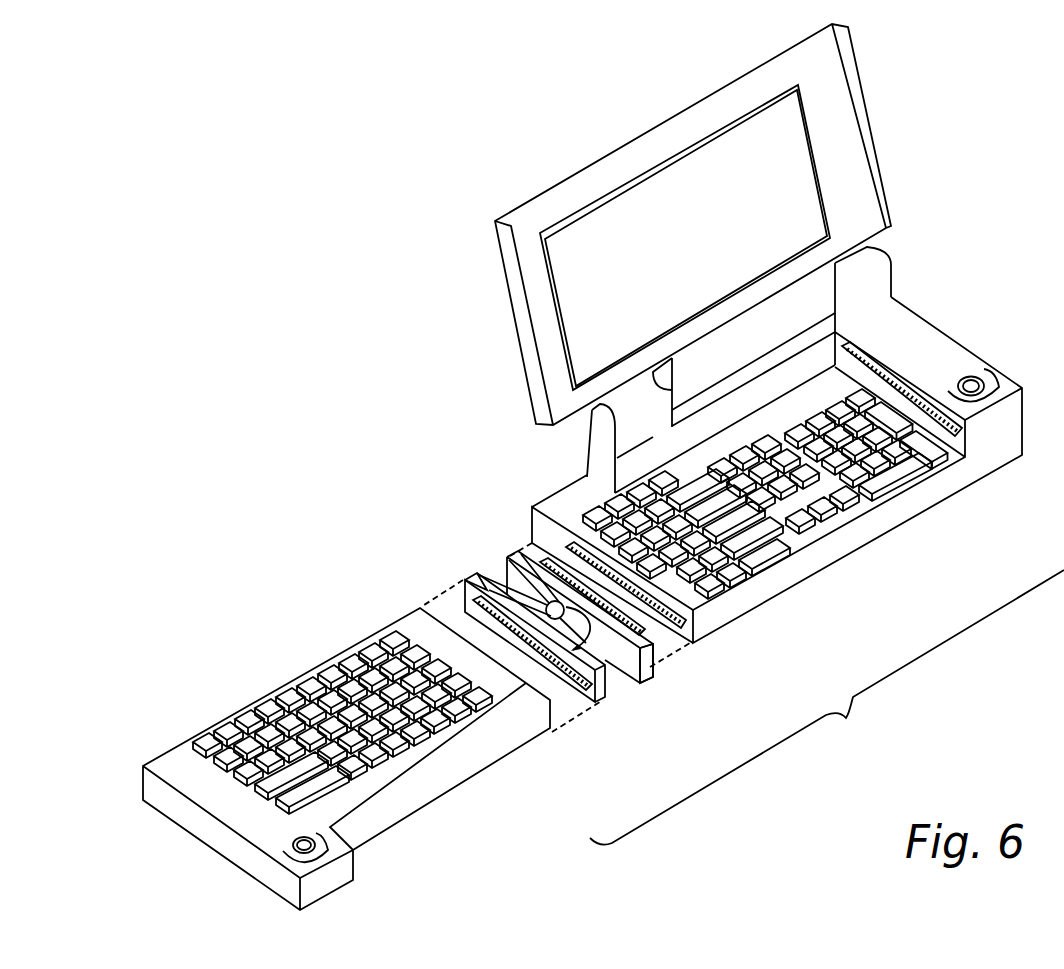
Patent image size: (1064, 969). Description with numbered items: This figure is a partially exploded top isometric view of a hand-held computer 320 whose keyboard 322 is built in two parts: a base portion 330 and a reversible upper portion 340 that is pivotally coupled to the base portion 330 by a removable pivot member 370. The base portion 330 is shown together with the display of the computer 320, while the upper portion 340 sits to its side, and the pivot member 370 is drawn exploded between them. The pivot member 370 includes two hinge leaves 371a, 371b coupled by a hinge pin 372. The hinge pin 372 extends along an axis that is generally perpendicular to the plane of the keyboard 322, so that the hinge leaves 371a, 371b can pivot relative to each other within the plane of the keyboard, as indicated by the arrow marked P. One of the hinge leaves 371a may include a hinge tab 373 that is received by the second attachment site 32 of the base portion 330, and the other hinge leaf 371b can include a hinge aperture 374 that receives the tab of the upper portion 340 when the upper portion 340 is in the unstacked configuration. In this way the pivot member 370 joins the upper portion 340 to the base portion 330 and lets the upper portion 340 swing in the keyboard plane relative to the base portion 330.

The hand-held computer 320 is at (943, 235).
The base portion 330 is at (895, 532).
The second attachment site 32 is at (692, 644).
The keyboard 322 is at (827, 707).
The reversible upper portion 340 is at (218, 842).
The removable pivot member 370 is at (526, 622).
The hinge leaf 371a is at (522, 552).
The hinge leaf 371b is at (503, 582).
The hinge pin 372 is at (488, 588).
The hinge tab 373 is at (654, 650).
The hinge aperture 374 is at (476, 579).